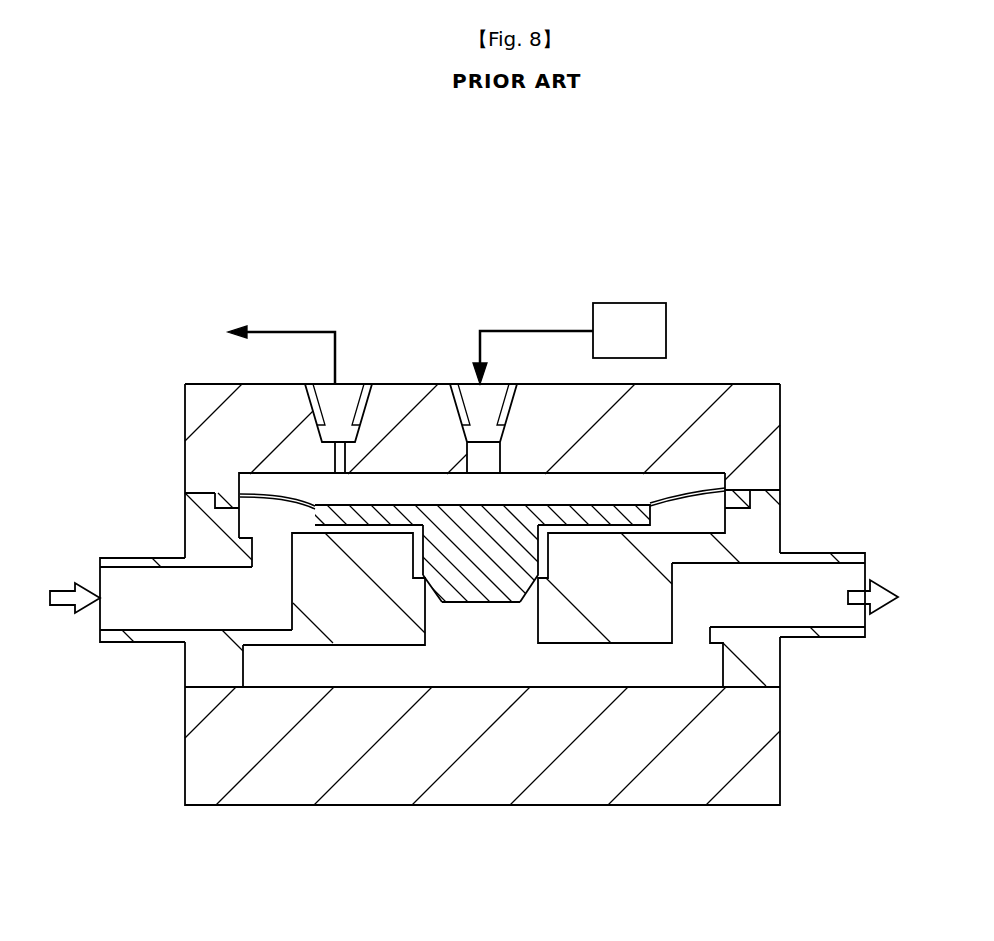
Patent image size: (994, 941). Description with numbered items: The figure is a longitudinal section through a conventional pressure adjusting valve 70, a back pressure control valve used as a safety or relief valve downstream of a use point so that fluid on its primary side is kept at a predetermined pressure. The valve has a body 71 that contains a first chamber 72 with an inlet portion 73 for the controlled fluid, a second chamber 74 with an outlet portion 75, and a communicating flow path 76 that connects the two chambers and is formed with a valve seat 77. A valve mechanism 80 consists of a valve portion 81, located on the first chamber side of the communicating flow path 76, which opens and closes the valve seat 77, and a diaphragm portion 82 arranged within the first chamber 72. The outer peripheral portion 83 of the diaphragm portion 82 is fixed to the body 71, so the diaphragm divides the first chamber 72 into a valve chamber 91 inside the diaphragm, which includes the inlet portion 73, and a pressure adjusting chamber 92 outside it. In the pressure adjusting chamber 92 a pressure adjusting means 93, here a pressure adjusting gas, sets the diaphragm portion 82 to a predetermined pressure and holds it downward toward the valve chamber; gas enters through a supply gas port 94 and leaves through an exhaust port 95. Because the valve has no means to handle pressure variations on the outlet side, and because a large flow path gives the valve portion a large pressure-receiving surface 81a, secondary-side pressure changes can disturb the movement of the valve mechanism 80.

The pressure adjusting valve 70 is at (200, 380).
The body 71 is at (808, 388).
The first chamber 72 is at (250, 517).
The inlet portion 73 is at (205, 567).
The second chamber 74 is at (653, 675).
The outlet portion 75 is at (690, 643).
The communicating flow path 76 is at (530, 640).
The valve seat 77 is at (428, 585).
The valve mechanism 80 is at (533, 555).
The valve portion 81 is at (538, 585).
The pressure-receiving surface 81a is at (497, 607).
The diaphragm portion 82 is at (588, 507).
The outer peripheral portion 83 is at (745, 495).
The valve chamber 91 is at (677, 523).
The pressure adjusting chamber 92 is at (417, 485).
The pressure adjusting means 93 is at (633, 318).
The supply gas port 94 is at (488, 403).
The exhaust port 95 is at (345, 398).